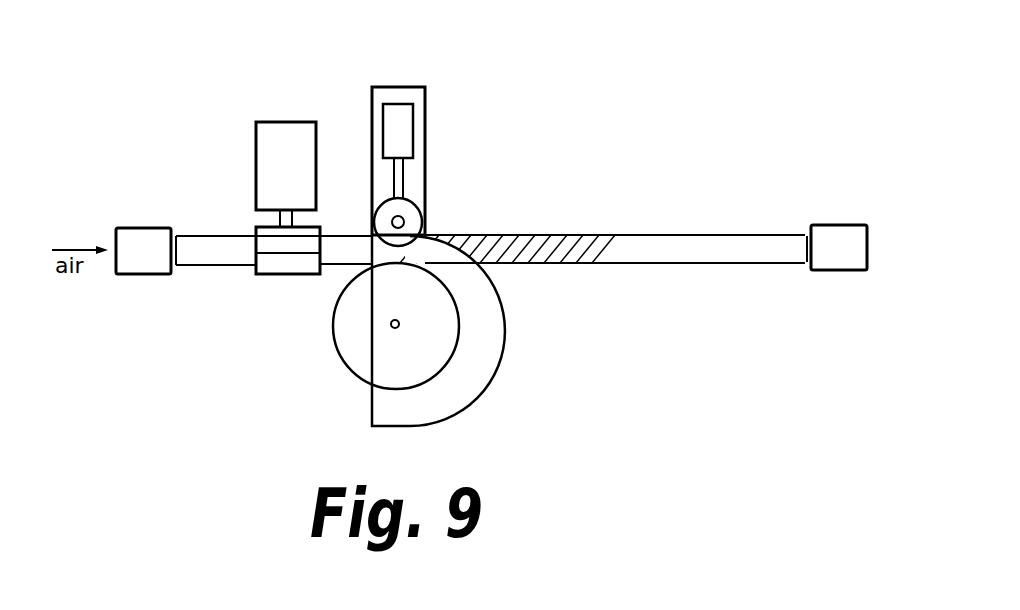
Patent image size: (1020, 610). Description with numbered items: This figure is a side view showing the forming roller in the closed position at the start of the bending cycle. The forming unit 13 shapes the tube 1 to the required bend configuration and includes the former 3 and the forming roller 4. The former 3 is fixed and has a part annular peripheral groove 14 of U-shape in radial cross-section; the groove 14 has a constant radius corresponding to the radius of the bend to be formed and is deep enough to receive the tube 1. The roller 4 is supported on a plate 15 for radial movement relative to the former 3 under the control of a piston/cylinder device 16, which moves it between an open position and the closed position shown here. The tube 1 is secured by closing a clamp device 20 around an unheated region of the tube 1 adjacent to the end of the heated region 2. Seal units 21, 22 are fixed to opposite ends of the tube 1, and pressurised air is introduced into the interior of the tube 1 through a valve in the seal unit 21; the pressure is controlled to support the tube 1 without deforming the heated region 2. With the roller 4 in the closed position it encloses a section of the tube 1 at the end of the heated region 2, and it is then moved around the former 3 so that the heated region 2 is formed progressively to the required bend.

The tube 1 is at (748, 252).
The heated region 2 is at (542, 235).
The former 3 is at (352, 349).
The forming roller 4 is at (410, 198).
The forming unit 13 is at (464, 211).
The part annular peripheral groove 14 is at (485, 360).
The plate 15 is at (401, 87).
The piston/cylinder device 16 is at (407, 130).
The clamp device 20 is at (270, 163).
The seal unit 21 is at (141, 233).
The seal unit 22 is at (840, 233).